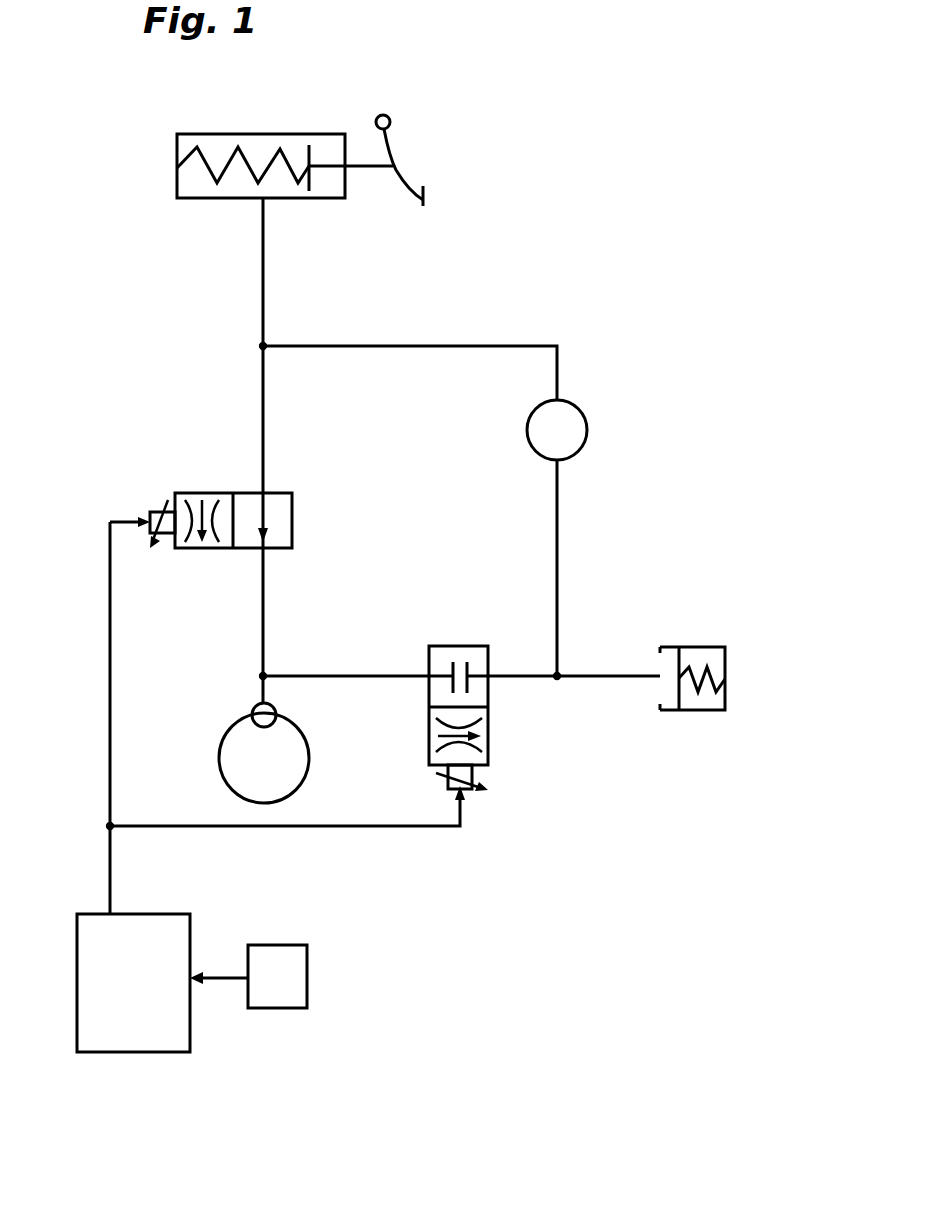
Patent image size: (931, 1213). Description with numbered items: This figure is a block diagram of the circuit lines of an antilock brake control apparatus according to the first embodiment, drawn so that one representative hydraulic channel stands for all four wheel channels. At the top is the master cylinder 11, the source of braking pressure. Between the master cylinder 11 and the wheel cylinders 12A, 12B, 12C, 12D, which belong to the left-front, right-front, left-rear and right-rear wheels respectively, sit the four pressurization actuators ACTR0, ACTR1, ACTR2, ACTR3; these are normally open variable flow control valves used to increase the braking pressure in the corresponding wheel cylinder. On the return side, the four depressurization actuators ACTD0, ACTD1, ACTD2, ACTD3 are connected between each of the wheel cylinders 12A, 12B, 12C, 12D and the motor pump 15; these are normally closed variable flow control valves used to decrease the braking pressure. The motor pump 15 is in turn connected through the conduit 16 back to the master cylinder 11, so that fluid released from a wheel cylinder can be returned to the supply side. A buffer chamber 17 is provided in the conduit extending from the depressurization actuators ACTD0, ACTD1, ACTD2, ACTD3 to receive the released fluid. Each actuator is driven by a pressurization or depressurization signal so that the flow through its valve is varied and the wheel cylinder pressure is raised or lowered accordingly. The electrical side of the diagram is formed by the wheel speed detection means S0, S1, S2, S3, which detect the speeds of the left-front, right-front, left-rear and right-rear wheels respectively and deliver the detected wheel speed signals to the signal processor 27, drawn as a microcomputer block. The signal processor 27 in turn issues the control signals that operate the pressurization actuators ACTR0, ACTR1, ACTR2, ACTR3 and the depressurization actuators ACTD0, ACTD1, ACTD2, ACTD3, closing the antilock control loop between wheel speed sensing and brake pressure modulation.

The master cylinder 11 is at (177, 176).
The wheel cylinder 12A is at (306, 744).
The wheel cylinder 12B is at (306, 744).
The wheel cylinder 12C is at (306, 744).
The wheel cylinder 12D is at (300, 730).
The motor pump 15 is at (587, 430).
The conduit 16 is at (473, 346).
The buffer chamber 17 is at (703, 647).
The signal processor 27 is at (163, 1052).
The pressurization actuator ACTR0 is at (159, 426).
The pressurization actuator ACTR1 is at (159, 426).
The pressurization actuator ACTR2 is at (159, 426).
The pressurization actuator ACTR3 is at (183, 493).
The depressurization actuator ACTD0 is at (528, 770).
The depressurization actuator ACTD1 is at (528, 770).
The depressurization actuator ACTD2 is at (528, 770).
The depressurization actuator ACTD3 is at (488, 742).
The wheel speed detection means S0 is at (381, 976).
The wheel speed detection means S1 is at (381, 976).
The wheel speed detection means S2 is at (381, 976).
The wheel speed detection means S3 is at (307, 978).